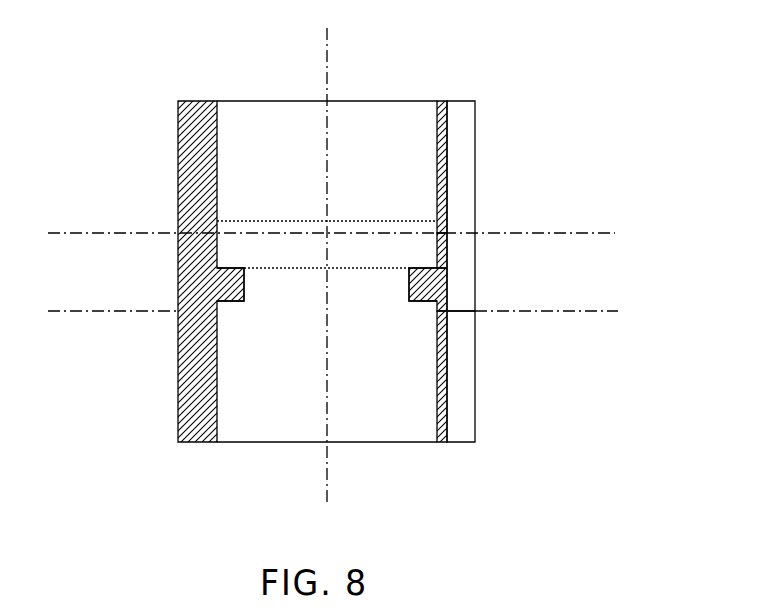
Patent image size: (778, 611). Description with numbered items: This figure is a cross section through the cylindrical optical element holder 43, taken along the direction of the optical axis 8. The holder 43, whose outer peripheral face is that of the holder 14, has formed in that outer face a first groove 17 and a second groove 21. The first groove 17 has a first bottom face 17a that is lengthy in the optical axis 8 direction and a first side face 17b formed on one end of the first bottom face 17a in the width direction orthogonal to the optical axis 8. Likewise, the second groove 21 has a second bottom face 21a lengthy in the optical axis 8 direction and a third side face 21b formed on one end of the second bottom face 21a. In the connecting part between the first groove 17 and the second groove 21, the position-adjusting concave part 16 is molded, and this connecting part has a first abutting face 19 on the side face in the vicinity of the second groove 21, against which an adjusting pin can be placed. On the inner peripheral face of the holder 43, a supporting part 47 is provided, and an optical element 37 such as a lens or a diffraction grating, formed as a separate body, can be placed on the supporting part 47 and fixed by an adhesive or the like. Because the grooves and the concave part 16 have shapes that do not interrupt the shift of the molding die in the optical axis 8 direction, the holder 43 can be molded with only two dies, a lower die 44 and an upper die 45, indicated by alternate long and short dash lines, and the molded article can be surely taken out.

The optical axis 8 is at (326, 68).
The holder 14 is at (178, 200).
The position-adjusting concave part 16 is at (474, 291).
The first groove 17 is at (496, 206).
The first bottom face 17a is at (449, 206).
The first side face 17b is at (466, 133).
The first abutting face 19 is at (465, 246).
The second groove 21 is at (496, 376).
The second bottom face 21a is at (447, 332).
The third side face 21b is at (466, 391).
The optical element 37 is at (284, 220).
The optical element holder 43 is at (160, 86).
The lower die 44 is at (78, 233).
The upper die 45 is at (90, 232).
The supporting part 47 is at (233, 302).